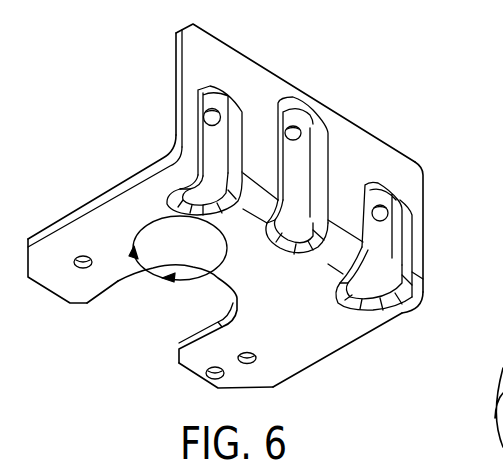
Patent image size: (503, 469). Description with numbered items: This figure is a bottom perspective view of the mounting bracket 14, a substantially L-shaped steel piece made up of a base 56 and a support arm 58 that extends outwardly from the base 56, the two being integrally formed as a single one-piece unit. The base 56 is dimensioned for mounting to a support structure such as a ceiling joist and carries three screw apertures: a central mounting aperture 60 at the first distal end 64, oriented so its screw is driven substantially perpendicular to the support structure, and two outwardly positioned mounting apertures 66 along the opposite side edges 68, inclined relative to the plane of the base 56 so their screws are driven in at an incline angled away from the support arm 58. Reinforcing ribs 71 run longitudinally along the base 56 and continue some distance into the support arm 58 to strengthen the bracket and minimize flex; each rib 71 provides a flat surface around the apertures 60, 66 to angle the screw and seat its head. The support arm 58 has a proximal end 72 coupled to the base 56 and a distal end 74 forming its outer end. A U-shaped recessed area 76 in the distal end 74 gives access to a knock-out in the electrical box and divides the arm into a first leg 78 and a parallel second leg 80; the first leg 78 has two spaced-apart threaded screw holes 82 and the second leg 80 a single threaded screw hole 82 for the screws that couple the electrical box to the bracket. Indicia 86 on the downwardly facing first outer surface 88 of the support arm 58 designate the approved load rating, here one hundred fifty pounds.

The mounting bracket 14 is at (80, 100).
The base 56 is at (380, 155).
The support arm 58 is at (348, 345).
The central mounting aperture 60 is at (312, 112).
The first distal end 64 is at (236, 31).
The outwardly positioned mounting apertures 66 is at (211, 115).
The side edges 68 is at (175, 50).
The reinforcing ribs 71 is at (203, 165).
The proximal end 72 is at (388, 313).
The distal end 74 is at (47, 290).
The recessed area 76 is at (228, 287).
The first leg 78 is at (100, 195).
The second leg 80 is at (275, 388).
The threaded screw holes 82 is at (75, 261).
The indicia 86 is at (153, 266).
The first outer surface 88 is at (105, 287).